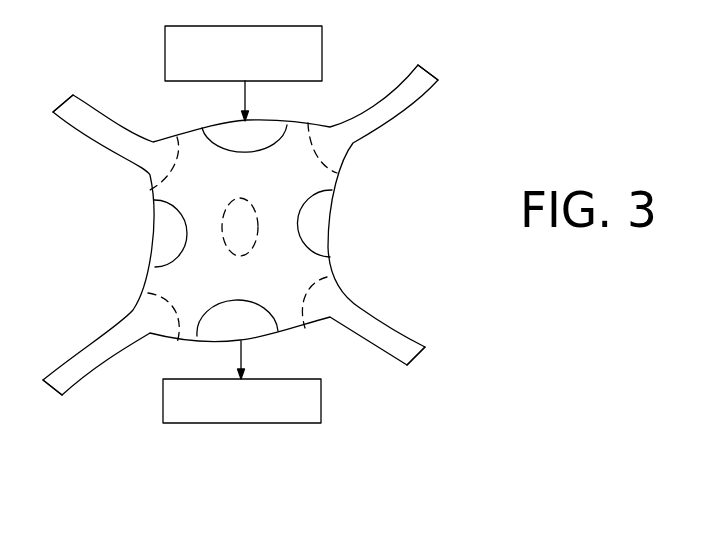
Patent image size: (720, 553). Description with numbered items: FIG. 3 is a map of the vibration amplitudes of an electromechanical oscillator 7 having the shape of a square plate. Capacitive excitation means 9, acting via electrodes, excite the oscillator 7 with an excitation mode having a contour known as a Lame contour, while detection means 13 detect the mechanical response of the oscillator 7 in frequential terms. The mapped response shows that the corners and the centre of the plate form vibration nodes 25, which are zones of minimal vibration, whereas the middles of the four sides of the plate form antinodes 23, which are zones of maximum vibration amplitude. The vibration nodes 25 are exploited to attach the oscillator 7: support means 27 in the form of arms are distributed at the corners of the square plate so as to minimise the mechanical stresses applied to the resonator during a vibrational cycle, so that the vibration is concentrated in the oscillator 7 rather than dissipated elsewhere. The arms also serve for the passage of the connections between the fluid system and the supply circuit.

The electromechanical oscillator 7 is at (334, 263).
The capacitive excitation means 9 is at (180, 60).
The detection means 13 is at (178, 402).
The antinodes 23 is at (252, 156).
The vibration nodes 25 is at (182, 158).
The support means 27 is at (102, 137).